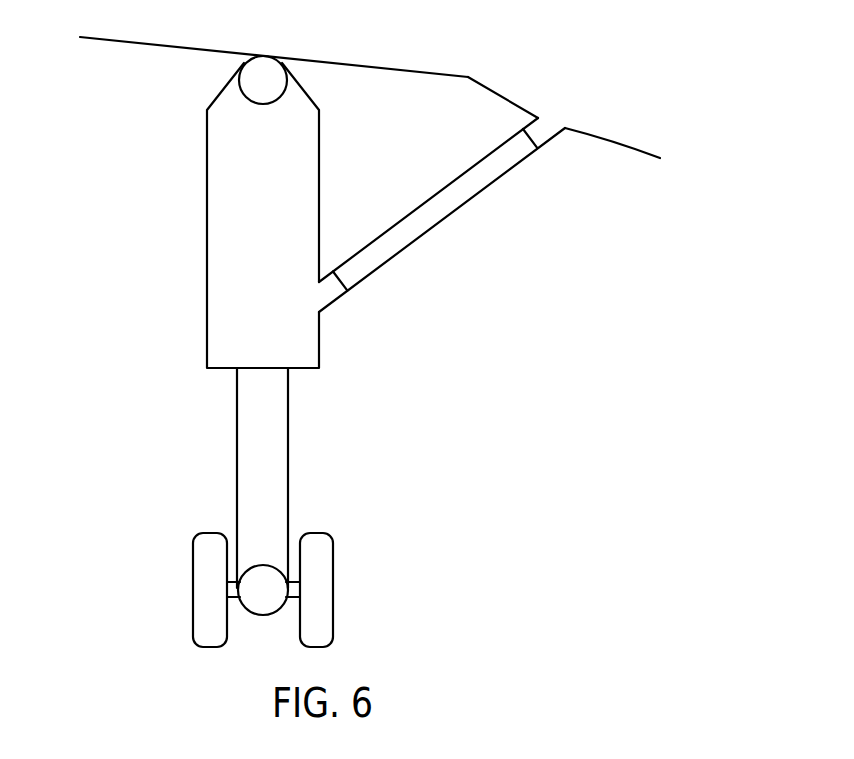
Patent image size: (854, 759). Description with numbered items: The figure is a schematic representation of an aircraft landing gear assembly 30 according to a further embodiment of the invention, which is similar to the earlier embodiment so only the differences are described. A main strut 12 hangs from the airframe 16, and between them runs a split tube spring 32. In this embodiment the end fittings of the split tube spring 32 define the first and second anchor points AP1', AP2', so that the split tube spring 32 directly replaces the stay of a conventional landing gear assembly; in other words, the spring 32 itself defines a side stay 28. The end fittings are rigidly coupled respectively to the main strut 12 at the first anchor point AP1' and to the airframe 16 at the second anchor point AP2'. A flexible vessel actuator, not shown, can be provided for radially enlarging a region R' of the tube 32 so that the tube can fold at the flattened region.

The main strut 12 is at (200, 241).
The airframe 16 is at (130, 44).
The side stay 28 is at (469, 244).
The landing gear assembly 30 is at (531, 78).
The split tube spring 32 is at (478, 197).
The region of the tube R' is at (428, 200).
The first anchor point AP1' is at (358, 322).
The second anchor point AP2' is at (571, 161).